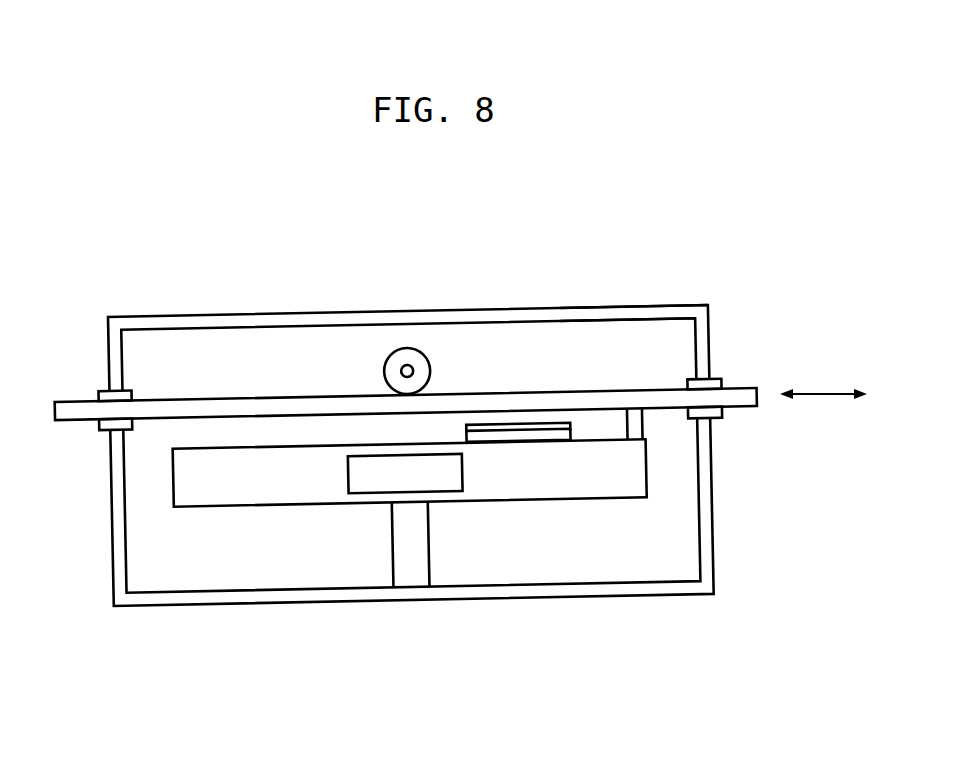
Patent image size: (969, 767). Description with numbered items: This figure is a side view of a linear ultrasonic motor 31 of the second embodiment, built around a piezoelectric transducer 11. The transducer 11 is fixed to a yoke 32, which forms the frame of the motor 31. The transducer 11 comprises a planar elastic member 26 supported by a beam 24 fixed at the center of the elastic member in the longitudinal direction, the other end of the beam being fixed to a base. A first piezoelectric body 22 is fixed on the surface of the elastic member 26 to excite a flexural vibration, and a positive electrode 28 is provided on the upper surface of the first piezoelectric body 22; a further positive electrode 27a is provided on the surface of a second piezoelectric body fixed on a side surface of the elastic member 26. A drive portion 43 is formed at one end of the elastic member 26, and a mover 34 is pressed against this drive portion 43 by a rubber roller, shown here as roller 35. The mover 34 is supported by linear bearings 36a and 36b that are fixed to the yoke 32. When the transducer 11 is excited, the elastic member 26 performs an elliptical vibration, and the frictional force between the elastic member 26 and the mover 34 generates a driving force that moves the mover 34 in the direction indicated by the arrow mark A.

The piezoelectric transducer 11 is at (316, 535).
The first piezoelectric body 22 is at (541, 432).
The beam 24 is at (428, 547).
The planar elastic member 26 is at (631, 487).
The positive electrode 27a is at (421, 460).
The positive electrode 28 is at (506, 426).
The motor 31 is at (268, 298).
The yoke 32 is at (620, 310).
The mover 34 is at (186, 400).
The roller 35 is at (396, 357).
The linear bearing 36a is at (716, 378).
The linear bearing 36b is at (106, 390).
The drive portion 43 is at (637, 415).
The arrow mark A is at (823, 381).